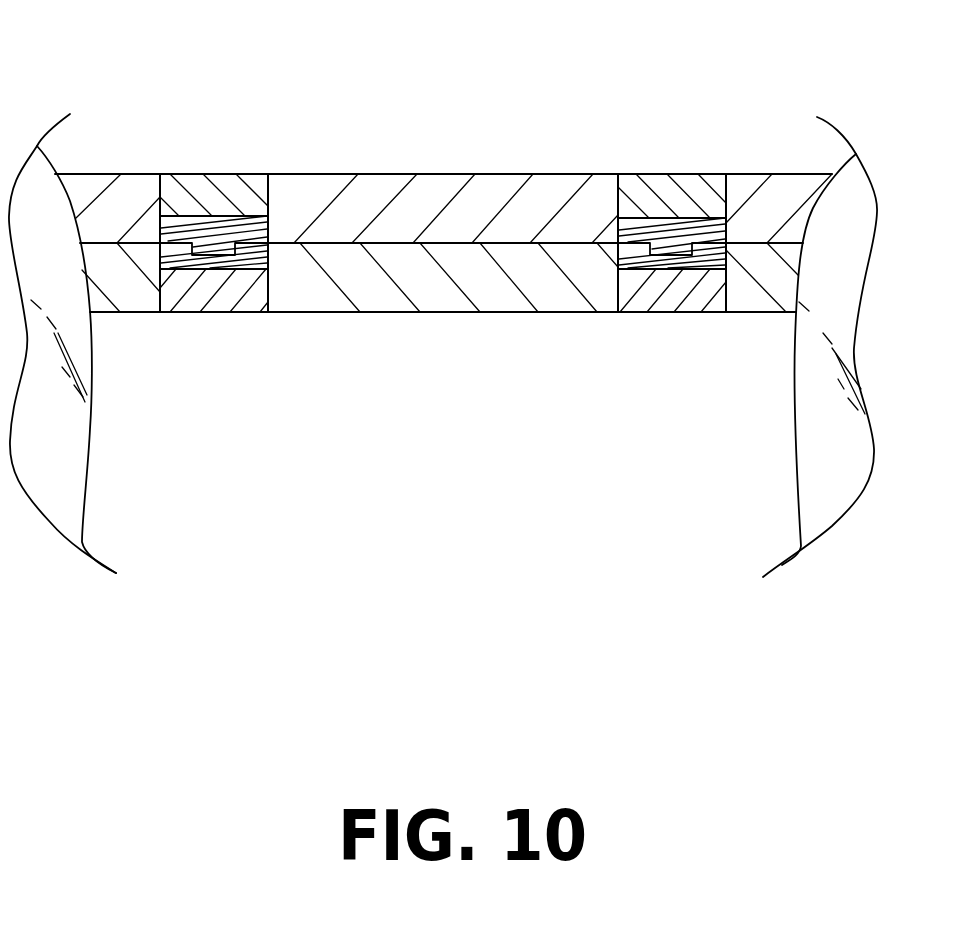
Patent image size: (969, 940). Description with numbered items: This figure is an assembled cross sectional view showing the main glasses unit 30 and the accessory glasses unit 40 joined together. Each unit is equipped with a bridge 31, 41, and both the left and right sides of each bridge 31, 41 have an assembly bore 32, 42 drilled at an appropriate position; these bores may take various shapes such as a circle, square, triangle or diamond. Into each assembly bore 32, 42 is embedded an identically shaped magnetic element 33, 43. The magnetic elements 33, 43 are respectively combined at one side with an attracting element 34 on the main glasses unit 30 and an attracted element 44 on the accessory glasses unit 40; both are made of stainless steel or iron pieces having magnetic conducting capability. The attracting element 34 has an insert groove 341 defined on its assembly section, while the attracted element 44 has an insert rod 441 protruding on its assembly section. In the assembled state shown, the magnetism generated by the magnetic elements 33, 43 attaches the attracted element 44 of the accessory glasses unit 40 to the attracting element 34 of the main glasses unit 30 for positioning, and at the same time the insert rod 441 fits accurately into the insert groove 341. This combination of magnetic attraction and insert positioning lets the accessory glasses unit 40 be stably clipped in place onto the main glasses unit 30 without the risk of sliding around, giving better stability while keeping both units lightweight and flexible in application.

The main glasses unit 30 is at (440, 401).
The bridge 31 is at (553, 297).
The assembly bore 32 is at (145, 313).
The magnetic element 33 is at (226, 297).
The attracting element 34 is at (424, 401).
The insert groove 341 is at (207, 262).
The accessory glasses unit 40 is at (443, 287).
The bridge 41 is at (543, 197).
The assembly bore 42 is at (145, 177).
The magnetic element 43 is at (226, 192).
The attracted element 44 is at (443, 302).
The insert rod 441 is at (443, 387).